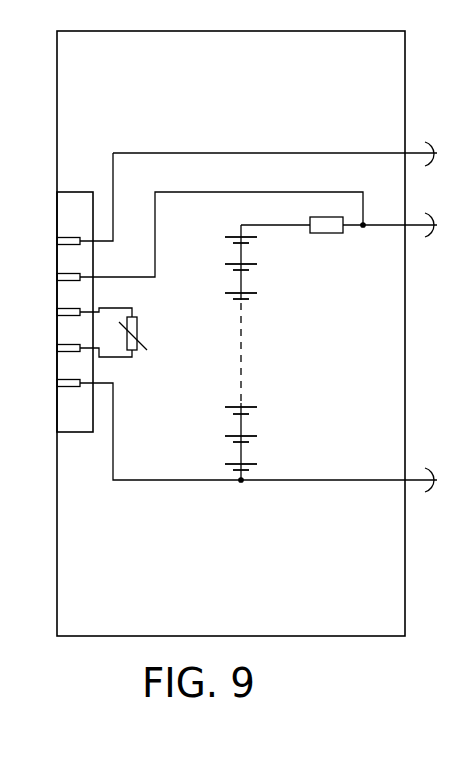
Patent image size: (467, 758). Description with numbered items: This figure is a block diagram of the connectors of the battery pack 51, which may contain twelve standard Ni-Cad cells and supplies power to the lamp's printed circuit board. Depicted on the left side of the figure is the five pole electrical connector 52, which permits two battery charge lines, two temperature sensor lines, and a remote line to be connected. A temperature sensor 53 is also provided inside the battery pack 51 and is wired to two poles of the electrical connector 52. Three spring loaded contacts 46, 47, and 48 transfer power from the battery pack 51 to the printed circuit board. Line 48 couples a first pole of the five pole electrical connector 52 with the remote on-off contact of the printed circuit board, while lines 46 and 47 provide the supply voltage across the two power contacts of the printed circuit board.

The battery pack 51 is at (262, 84).
The electrical connector 52 is at (81, 192).
The temperature sensor 53 is at (147, 352).
The spring loaded contact 46 is at (437, 237).
The spring loaded contact 47 is at (435, 468).
The spring loaded contact 48 is at (435, 143).